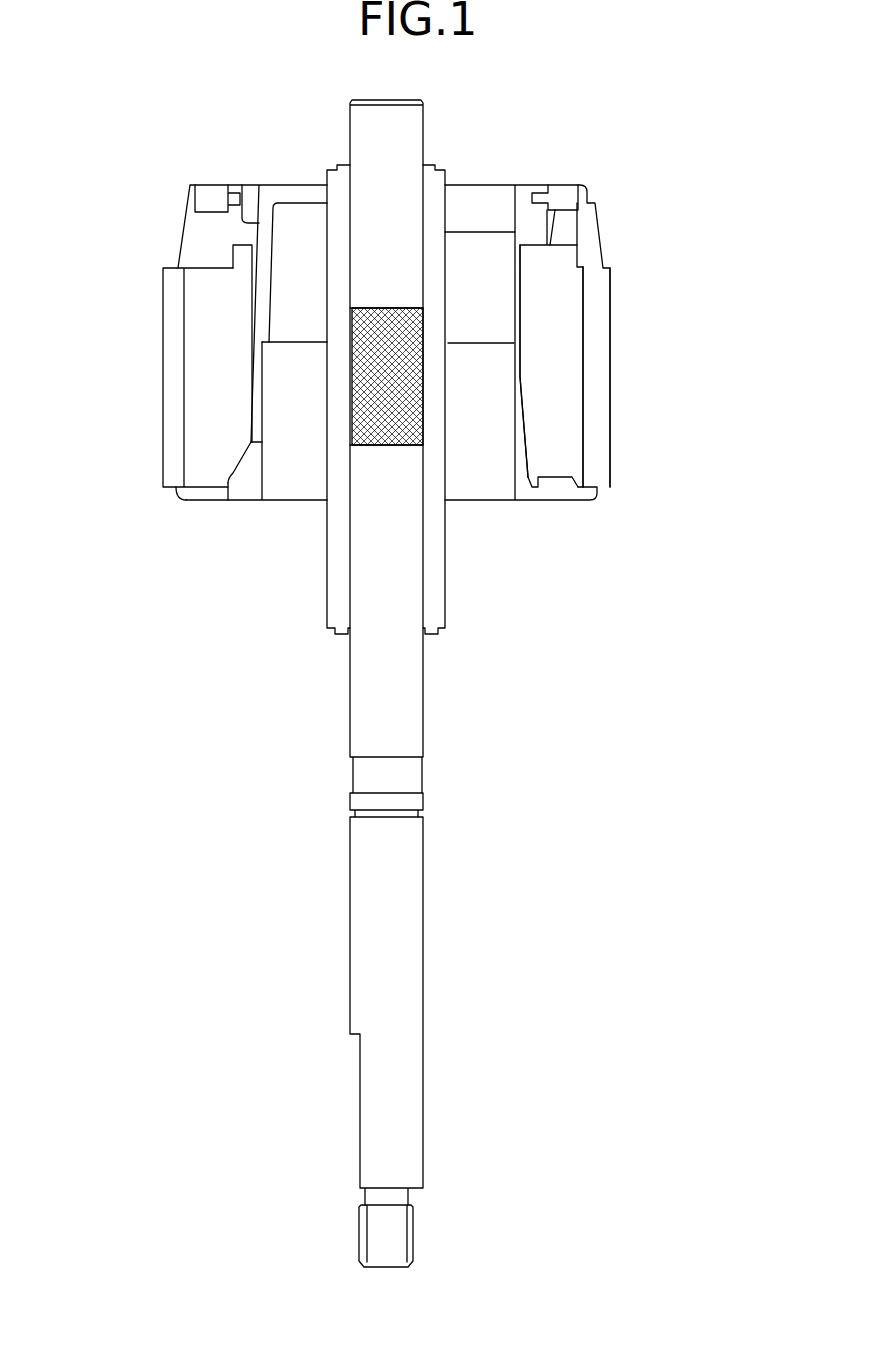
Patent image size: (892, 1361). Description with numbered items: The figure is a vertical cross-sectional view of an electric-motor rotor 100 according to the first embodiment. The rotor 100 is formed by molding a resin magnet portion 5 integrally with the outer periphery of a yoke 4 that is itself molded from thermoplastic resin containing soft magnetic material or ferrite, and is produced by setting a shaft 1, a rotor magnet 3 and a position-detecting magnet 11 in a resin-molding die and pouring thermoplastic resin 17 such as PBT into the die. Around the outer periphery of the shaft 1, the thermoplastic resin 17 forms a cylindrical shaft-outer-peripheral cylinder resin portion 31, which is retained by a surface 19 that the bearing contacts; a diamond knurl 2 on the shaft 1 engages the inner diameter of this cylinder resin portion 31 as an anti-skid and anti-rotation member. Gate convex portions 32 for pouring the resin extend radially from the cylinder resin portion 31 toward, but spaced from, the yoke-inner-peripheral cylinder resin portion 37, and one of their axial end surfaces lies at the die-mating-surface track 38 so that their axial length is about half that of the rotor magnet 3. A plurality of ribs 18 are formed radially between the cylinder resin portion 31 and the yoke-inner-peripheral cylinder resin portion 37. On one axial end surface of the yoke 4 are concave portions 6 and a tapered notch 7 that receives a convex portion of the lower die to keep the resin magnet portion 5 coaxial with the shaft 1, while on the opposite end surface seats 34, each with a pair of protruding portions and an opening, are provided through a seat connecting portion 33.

The shaft 1 is at (405, 897).
The diamond knurl 2 is at (380, 400).
The rotor magnet 3 is at (173, 322).
The yoke 4 is at (557, 442).
The resin magnet portion 5 is at (597, 387).
The concave portions 6 is at (545, 487).
The tapered notch 7 is at (237, 472).
The position-detecting magnet 11 is at (560, 182).
The thermoplastic resin 17 is at (198, 493).
The ribs 18 is at (480, 250).
The surface 19 is at (432, 635).
The shaft-outer-peripheral cylinder resin portion 31 is at (337, 600).
The gate convex portions 32 is at (299, 217).
The seat connecting portion 33 is at (243, 253).
The seats 34 is at (563, 230).
The yoke-inner-peripheral cylinder resin portion 37 is at (527, 222).
The die-mating-surface track 38 is at (293, 343).
The electric-motor rotor 100 is at (700, 334).